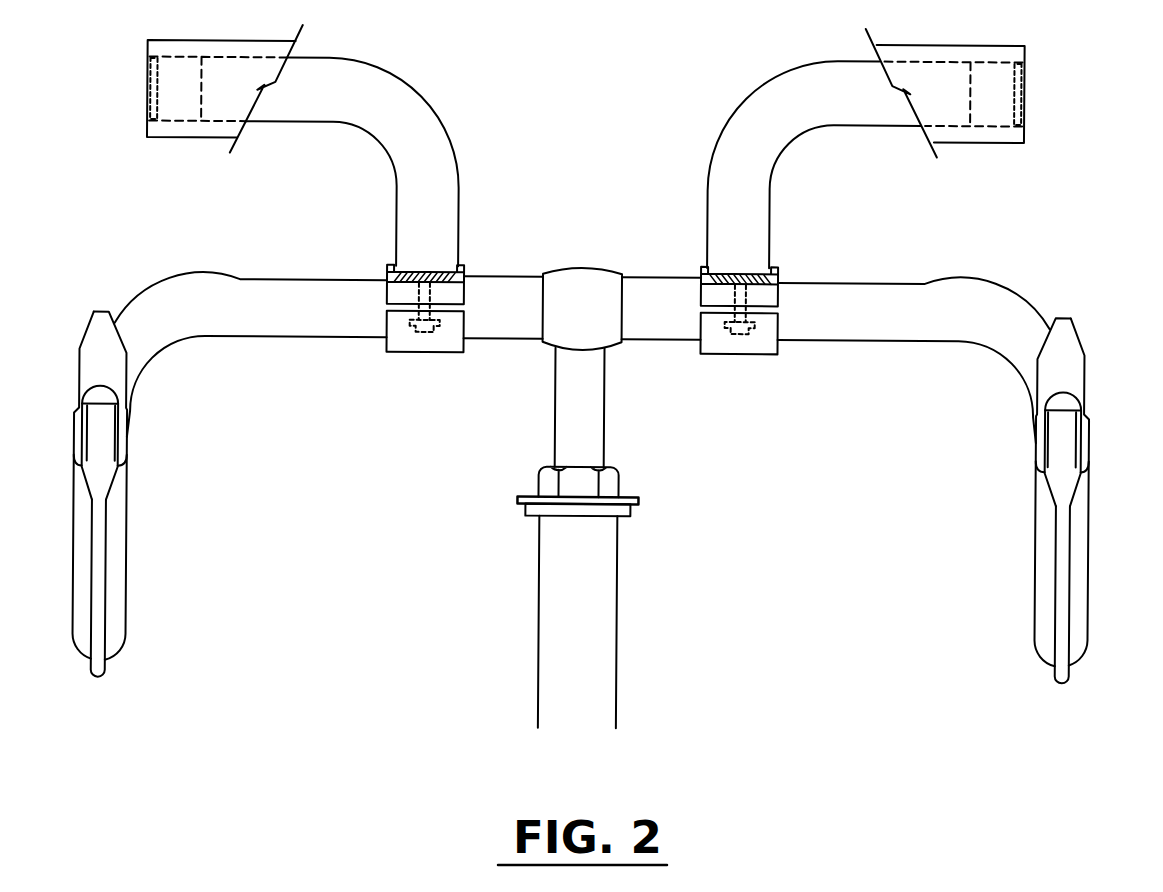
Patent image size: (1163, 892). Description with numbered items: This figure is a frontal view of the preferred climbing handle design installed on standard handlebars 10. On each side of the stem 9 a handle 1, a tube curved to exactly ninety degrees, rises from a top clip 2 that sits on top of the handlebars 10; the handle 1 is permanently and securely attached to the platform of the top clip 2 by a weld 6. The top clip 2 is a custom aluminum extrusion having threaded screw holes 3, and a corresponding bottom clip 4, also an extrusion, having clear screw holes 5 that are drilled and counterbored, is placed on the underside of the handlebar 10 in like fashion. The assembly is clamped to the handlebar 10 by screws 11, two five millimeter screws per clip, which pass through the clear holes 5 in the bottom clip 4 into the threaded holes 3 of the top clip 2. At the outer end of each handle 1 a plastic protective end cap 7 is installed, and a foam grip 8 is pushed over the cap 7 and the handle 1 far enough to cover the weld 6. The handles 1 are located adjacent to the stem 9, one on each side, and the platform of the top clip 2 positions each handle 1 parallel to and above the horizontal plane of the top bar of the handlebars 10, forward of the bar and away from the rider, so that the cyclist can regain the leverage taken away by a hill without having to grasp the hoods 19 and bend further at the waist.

The handle 1 is at (297, 125).
The top clip 2 is at (700, 274).
The threaded screw holes 3 is at (413, 292).
The bottom clip 4 is at (402, 356).
The clear screw holes 5 is at (750, 323).
The weld 6 is at (755, 273).
The plastic protective end cap 7 is at (173, 55).
The foam grip 8 is at (953, 44).
The stem 9 is at (605, 412).
The handlebars 10 is at (993, 282).
The screws 11 is at (735, 329).
The hoods 19 is at (84, 341).